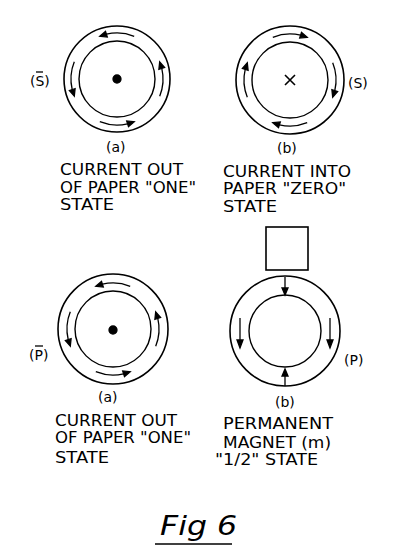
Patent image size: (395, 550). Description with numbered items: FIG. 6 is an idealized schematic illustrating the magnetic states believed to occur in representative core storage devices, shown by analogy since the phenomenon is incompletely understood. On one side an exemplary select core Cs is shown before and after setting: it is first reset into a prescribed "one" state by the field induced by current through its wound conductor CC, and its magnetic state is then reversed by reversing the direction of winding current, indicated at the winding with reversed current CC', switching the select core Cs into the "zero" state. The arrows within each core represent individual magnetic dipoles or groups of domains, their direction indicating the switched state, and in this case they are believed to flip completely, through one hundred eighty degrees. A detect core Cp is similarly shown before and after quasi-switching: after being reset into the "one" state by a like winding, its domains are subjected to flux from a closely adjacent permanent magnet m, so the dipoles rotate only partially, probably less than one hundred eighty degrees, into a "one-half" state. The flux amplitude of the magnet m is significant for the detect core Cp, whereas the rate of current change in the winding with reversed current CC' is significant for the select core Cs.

The select core Cs is at (247, 45).
The wound conductor CC is at (160, 218).
The winding with reversed current CC' is at (242, 69).
The detect core Cp is at (245, 293).
The magnet m is at (308, 232).